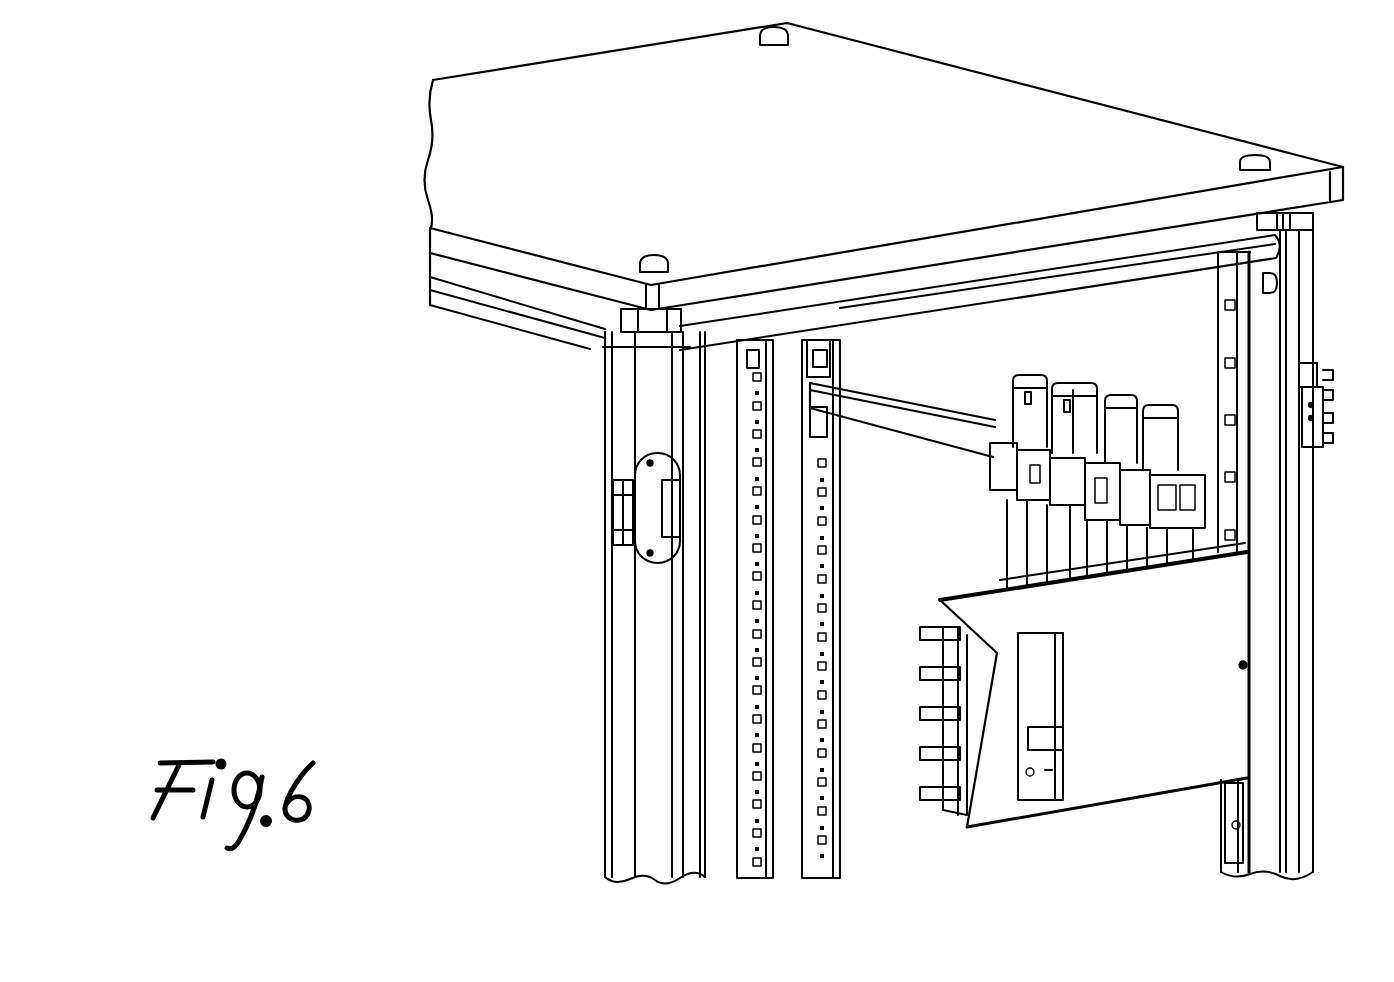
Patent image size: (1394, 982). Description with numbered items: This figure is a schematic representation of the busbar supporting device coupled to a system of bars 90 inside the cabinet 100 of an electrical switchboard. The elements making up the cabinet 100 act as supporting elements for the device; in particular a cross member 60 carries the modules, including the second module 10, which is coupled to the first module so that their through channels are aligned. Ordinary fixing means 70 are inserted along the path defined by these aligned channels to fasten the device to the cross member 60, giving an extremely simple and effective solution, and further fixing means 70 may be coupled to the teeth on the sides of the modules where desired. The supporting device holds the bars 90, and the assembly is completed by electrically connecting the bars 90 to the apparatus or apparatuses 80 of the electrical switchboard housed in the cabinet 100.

The cabinet 100 is at (1197, 75).
The second module 10 is at (1050, 395).
The cross member 60 is at (914, 420).
The fixing means 70 is at (1022, 375).
The apparatus 80 is at (1047, 700).
The bars 90 is at (1090, 382).